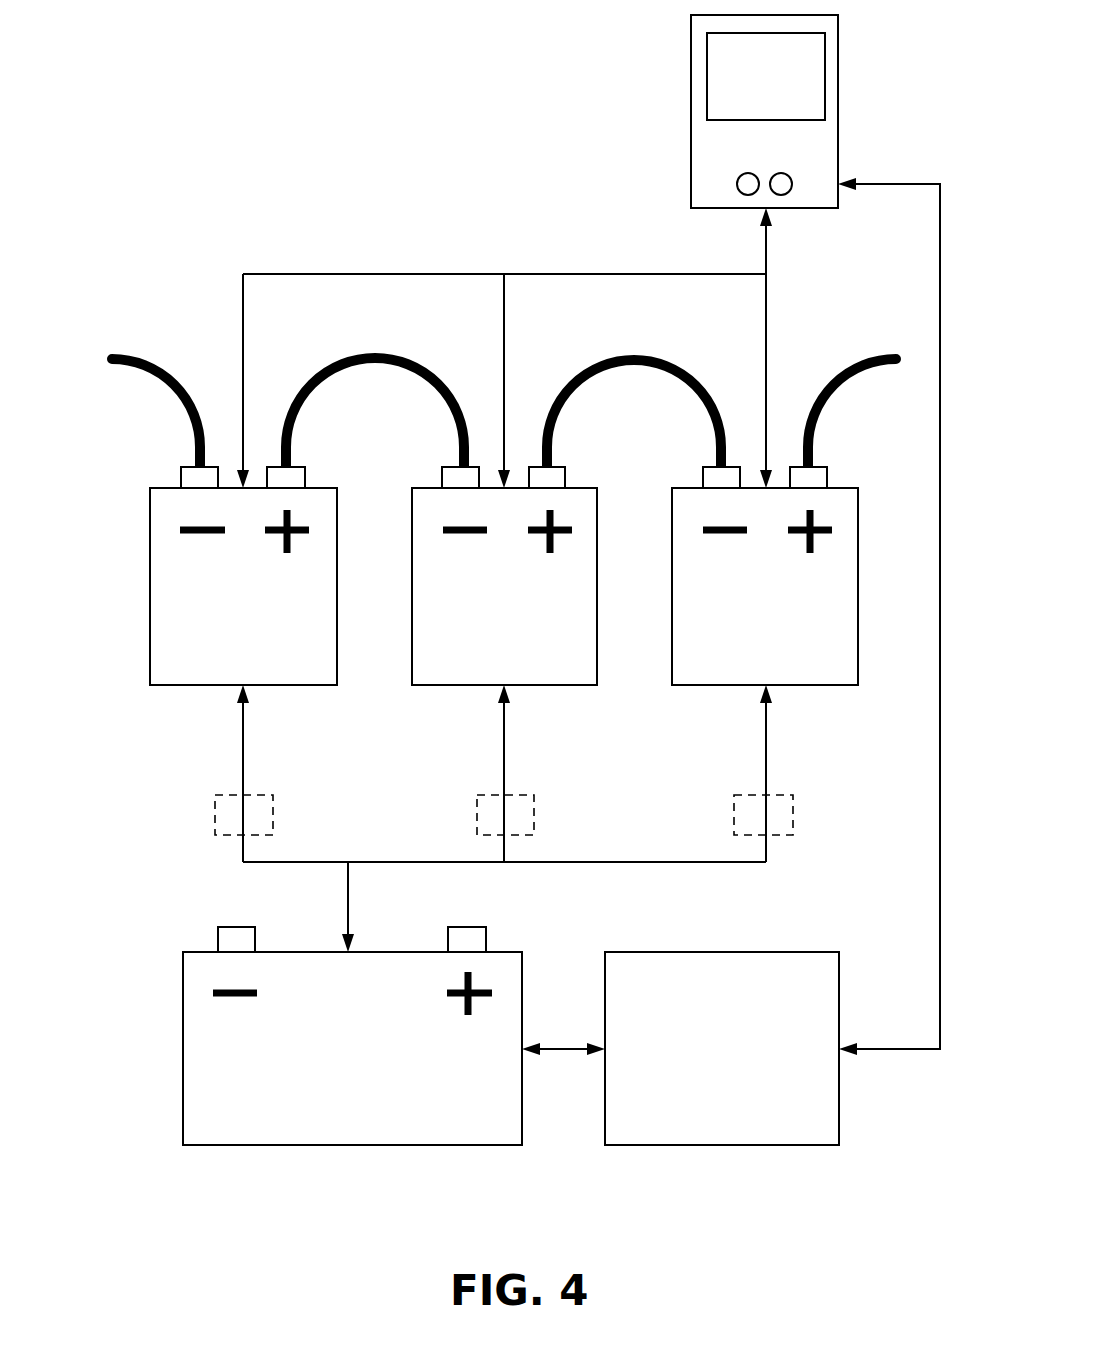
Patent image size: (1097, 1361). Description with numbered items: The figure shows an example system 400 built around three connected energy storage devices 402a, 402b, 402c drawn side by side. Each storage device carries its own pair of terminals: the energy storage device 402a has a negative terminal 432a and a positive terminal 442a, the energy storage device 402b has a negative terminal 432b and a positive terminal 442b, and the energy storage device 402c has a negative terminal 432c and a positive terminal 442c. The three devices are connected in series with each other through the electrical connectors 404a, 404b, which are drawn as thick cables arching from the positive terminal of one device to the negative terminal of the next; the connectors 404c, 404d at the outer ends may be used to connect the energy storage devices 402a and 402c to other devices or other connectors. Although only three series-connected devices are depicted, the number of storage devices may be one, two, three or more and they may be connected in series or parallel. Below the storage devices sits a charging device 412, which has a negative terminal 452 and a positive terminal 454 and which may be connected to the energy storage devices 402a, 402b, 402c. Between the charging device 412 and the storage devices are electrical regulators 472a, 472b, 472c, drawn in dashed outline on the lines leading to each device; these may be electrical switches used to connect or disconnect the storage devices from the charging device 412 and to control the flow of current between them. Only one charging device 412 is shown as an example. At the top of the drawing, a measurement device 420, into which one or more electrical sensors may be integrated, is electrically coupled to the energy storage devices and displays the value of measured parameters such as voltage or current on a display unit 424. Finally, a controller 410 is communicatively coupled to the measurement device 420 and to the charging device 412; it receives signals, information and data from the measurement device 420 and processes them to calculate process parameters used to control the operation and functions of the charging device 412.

The system 400 is at (467, 170).
The energy storage device 402a is at (205, 686).
The energy storage device 402b is at (465, 686).
The energy storage device 402c is at (725, 686).
The electrical connector 404a is at (378, 353).
The electrical connector 404b is at (640, 353).
The connector 404c is at (130, 357).
The connector 404d is at (888, 357).
The controller 410 is at (720, 1147).
The charging device 412 is at (355, 1052).
The measurement device 420 is at (754, 110).
The display unit 424 is at (822, 77).
The negative terminal 432a is at (182, 487).
The negative terminal 432b is at (442, 487).
The negative terminal 432c is at (703, 487).
The positive terminal 442a is at (296, 468).
The positive terminal 442b is at (558, 468).
The positive terminal 442c is at (816, 468).
The negative terminal 452 is at (237, 927).
The positive terminal 454 is at (470, 927).
The electrical regulator 472a is at (212, 815).
The electrical regulator 472b is at (474, 815).
The electrical regulator 472c is at (731, 815).